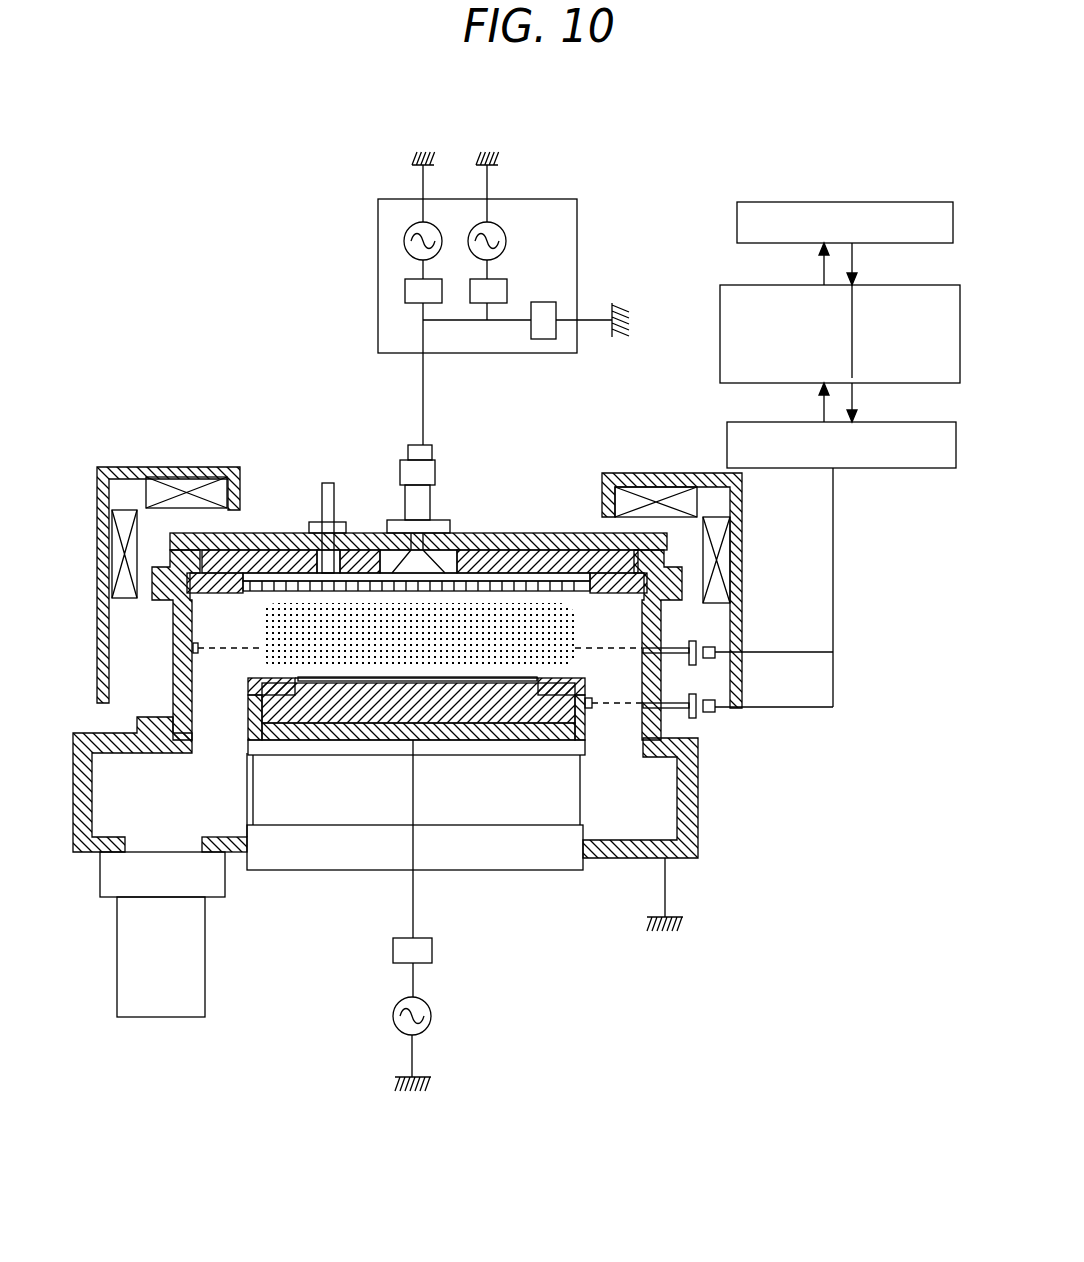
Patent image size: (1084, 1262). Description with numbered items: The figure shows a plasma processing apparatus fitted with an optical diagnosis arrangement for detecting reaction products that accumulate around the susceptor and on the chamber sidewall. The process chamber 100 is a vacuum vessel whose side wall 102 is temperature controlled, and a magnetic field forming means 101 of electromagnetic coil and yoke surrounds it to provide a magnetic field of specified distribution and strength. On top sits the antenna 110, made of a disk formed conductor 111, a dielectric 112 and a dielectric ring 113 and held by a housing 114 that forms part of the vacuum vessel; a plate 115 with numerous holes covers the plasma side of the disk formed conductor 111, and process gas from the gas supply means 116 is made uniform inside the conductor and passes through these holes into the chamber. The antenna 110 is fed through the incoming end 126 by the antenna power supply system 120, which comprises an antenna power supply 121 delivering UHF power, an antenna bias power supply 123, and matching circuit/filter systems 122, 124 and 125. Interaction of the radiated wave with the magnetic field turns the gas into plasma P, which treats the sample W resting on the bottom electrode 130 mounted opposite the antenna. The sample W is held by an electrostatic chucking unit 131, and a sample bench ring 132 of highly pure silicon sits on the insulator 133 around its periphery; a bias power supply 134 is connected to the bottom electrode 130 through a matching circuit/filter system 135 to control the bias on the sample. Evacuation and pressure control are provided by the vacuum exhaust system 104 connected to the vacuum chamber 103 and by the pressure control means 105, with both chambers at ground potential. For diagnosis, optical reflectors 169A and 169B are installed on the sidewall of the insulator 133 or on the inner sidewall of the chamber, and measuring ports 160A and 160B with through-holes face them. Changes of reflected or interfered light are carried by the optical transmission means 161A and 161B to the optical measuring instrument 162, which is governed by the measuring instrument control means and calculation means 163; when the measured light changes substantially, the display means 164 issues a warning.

The process chamber 100 is at (251, 630).
The magnetic field forming means 101 is at (97, 583).
The side wall 102 is at (173, 667).
The vacuum chamber 103 is at (112, 770).
The vacuum exhaust system 104 is at (147, 1007).
The pressure control means 105 is at (112, 892).
The antenna 110 is at (382, 523).
The disk formed conductor 111 is at (300, 565).
The dielectric 112 is at (220, 565).
The dielectric ring 113 is at (160, 545).
The housing 114 is at (108, 590).
The plate 115 is at (253, 570).
The gas supply means 116 is at (322, 483).
The antenna power supply system 120 is at (408, 190).
The antenna power supply 121 is at (407, 237).
The matching circuit/filter system 122 is at (403, 290).
The antenna bias power supply 123 is at (507, 235).
The matching circuit/filter system 124 is at (507, 287).
The matching circuit/filter system 125 is at (557, 302).
The incoming end 126 is at (410, 445).
The bottom electrode 130 is at (553, 885).
The electrostatic chucking unit 131 is at (338, 702).
The sample bench ring 132 is at (292, 697).
The insulator 133 is at (628, 792).
The bias power supply 134 is at (432, 1018).
The matching circuit/filter system 135 is at (432, 952).
The measuring port 160A is at (680, 710).
The measuring port 160B is at (693, 648).
The optical transmission means 161A is at (715, 710).
The optical transmission means 161B is at (715, 648).
The optical measuring instrument 162 is at (727, 428).
The measuring instrument control means and calculation means 163 is at (721, 293).
The display means 164 is at (737, 213).
The optical reflector 169A is at (590, 710).
The optical reflector 169B is at (198, 654).
The sample W is at (392, 678).
The plasma P is at (557, 635).